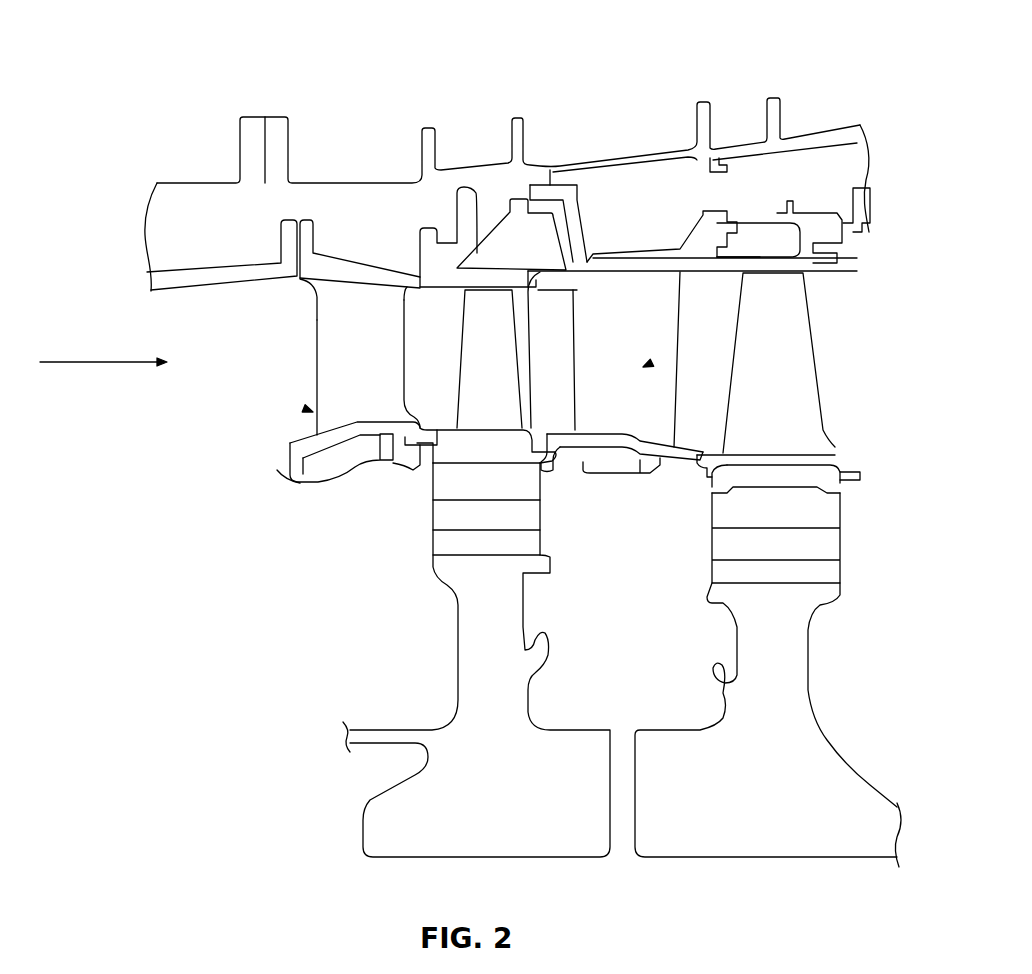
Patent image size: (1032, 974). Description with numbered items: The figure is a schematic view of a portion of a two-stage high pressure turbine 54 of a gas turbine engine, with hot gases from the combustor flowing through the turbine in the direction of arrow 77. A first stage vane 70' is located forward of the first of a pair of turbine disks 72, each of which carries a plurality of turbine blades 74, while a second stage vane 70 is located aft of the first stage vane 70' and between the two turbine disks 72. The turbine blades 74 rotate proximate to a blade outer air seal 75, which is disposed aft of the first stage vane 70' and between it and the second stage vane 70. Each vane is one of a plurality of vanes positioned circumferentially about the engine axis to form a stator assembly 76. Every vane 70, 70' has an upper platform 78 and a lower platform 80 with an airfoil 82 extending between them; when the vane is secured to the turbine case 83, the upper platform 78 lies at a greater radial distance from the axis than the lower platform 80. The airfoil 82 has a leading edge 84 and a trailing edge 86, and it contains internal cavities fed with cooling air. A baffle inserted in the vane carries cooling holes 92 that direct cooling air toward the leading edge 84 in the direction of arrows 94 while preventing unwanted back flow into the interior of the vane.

The high pressure turbine 54 is at (838, 42).
The arrow 77 is at (108, 362).
The stator assembly 76 is at (348, 232).
The upper platform 78 is at (373, 280).
The blade outer air seal 75 is at (497, 272).
The turbine case 83 is at (563, 172).
The cooling holes 92 is at (292, 246).
The arrows 94 is at (432, 284).
The airfoil 82 is at (327, 317).
The leading edge 84 is at (315, 342).
The trailing edge 86 is at (403, 322).
The second stage vane 70 is at (682, 350).
The first stage vane 70' is at (263, 390).
The lower platform 80 is at (315, 433).
The turbine blades 74 is at (480, 410).
The turbine disks 72 is at (458, 722).